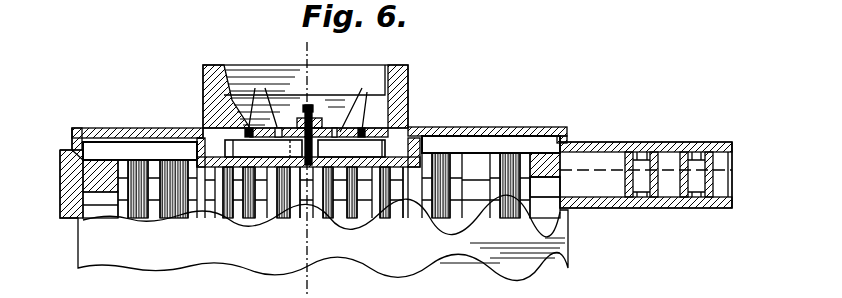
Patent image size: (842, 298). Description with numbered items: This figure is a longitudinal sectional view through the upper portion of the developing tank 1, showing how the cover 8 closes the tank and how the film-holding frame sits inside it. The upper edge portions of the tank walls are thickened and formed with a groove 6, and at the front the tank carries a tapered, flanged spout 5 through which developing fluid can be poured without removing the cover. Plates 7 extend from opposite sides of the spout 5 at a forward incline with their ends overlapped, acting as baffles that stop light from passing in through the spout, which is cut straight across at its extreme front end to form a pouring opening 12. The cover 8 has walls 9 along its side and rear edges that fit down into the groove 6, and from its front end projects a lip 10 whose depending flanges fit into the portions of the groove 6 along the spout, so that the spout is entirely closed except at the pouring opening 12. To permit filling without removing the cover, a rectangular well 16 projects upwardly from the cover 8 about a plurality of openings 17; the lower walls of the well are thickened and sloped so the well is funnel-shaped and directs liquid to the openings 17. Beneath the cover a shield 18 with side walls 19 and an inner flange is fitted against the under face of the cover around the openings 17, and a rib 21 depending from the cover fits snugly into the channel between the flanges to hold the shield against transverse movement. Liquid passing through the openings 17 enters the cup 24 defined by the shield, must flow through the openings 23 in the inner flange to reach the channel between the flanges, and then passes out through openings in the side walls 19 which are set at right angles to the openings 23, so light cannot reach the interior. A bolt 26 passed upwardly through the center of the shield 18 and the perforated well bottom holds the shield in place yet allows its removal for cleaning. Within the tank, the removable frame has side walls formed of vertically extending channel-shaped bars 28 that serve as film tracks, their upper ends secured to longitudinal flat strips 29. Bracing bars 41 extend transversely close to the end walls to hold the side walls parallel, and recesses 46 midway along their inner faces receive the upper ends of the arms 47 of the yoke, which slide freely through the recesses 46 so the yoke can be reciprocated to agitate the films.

The tank 1 is at (568, 240).
The spout 5 is at (672, 208).
The groove 6 is at (62, 190).
The plates 7 is at (304, 55).
The cover 8 is at (480, 127).
The walls 9 is at (72, 140).
The lip 10 is at (622, 142).
The pouring opening 12 is at (728, 187).
The well 16 is at (407, 95).
The openings 17 is at (313, 99).
The shield 18 is at (372, 168).
The side walls 19 is at (430, 128).
The rib 21 is at (205, 130).
The openings 23 is at (381, 148).
The cup 24 is at (306, 175).
The bolt 26 is at (313, 115).
The bars 28 is at (210, 218).
The strips 29 is at (548, 188).
The bracing bars 41 is at (100, 147).
The recesses 46 is at (127, 147).
The arms 47 is at (122, 215).